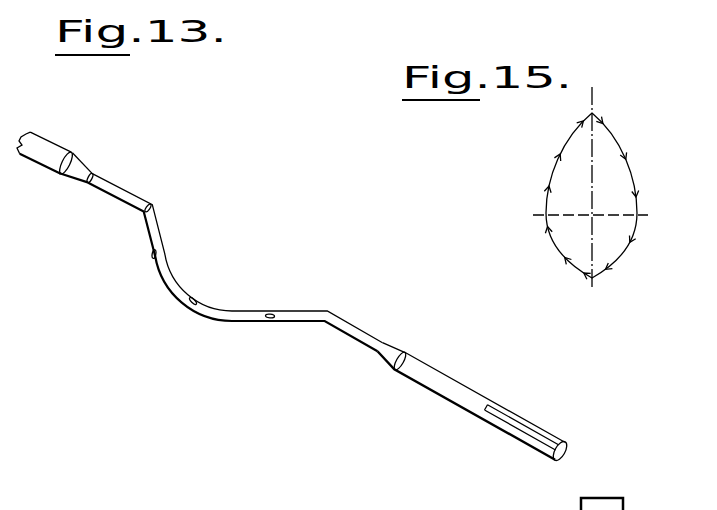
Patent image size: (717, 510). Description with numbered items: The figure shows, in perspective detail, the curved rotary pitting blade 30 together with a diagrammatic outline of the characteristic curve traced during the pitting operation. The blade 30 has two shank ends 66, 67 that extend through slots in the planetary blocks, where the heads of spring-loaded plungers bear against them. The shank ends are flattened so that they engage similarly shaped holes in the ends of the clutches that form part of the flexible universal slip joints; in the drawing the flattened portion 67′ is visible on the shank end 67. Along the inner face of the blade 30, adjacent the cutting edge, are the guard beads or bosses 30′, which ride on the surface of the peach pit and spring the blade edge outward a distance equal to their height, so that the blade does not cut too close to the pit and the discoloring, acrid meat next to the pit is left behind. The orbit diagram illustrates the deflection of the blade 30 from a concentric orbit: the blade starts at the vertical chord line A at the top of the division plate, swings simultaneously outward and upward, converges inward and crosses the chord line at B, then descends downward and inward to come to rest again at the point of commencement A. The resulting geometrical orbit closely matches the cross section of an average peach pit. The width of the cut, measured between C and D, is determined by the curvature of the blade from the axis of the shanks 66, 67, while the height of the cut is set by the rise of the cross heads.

In FIG. 13, the shank end 66 is at (63, 156).
In FIG. 13, the pitting blade 30 is at (220, 315).
In FIG. 13, the guard beads 30′ is at (160, 255).
In FIG. 13, the shank end 67 is at (443, 372).
In FIG. 13, the flattened portion 67′ is at (523, 428).
In FIG. 15, the vertical chord line A is at (602, 293).
In FIG. 15, the chord line crossing point B is at (603, 97).
In FIG. 15, the cut width end point C is at (515, 217).
In FIG. 15, the cut width end point D is at (659, 218).